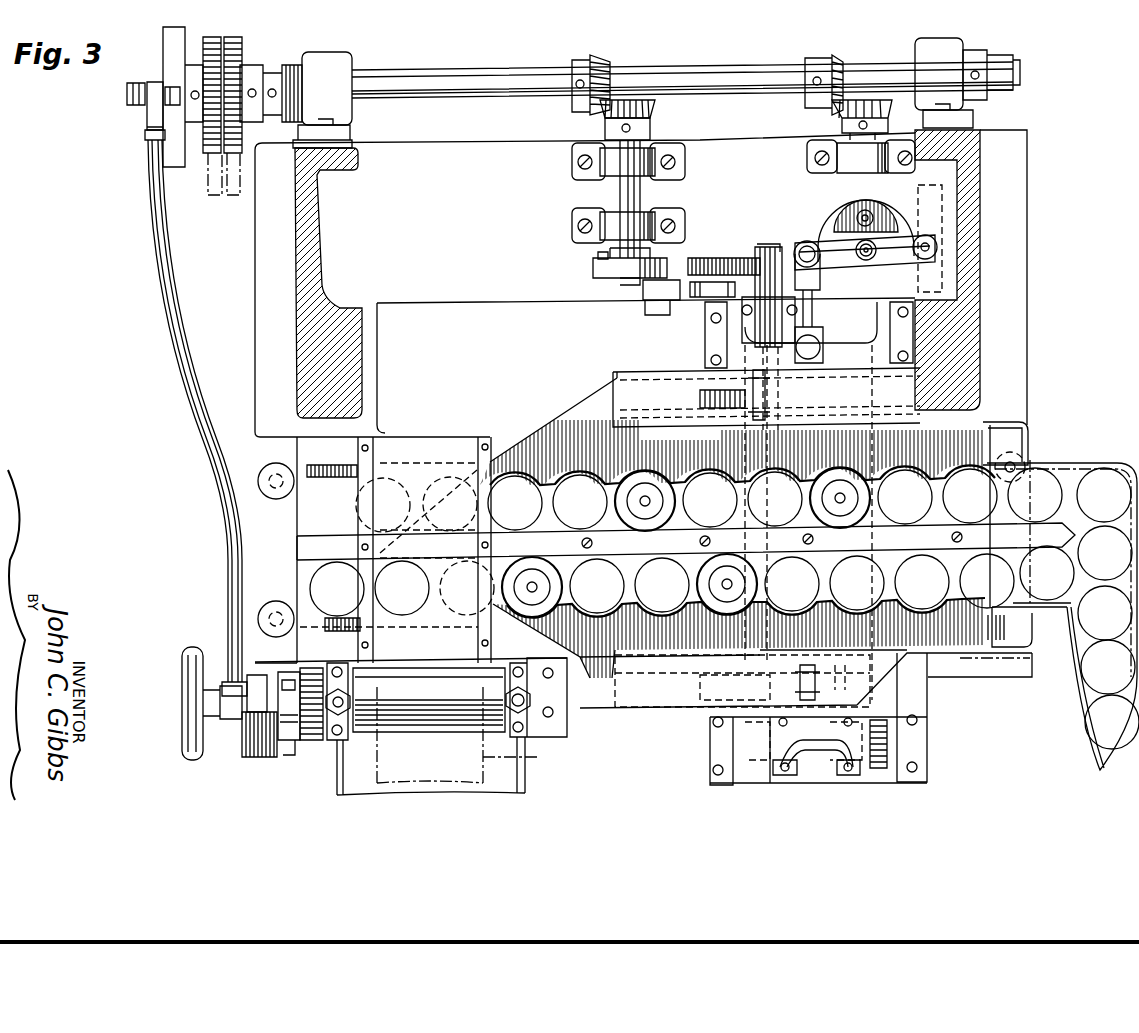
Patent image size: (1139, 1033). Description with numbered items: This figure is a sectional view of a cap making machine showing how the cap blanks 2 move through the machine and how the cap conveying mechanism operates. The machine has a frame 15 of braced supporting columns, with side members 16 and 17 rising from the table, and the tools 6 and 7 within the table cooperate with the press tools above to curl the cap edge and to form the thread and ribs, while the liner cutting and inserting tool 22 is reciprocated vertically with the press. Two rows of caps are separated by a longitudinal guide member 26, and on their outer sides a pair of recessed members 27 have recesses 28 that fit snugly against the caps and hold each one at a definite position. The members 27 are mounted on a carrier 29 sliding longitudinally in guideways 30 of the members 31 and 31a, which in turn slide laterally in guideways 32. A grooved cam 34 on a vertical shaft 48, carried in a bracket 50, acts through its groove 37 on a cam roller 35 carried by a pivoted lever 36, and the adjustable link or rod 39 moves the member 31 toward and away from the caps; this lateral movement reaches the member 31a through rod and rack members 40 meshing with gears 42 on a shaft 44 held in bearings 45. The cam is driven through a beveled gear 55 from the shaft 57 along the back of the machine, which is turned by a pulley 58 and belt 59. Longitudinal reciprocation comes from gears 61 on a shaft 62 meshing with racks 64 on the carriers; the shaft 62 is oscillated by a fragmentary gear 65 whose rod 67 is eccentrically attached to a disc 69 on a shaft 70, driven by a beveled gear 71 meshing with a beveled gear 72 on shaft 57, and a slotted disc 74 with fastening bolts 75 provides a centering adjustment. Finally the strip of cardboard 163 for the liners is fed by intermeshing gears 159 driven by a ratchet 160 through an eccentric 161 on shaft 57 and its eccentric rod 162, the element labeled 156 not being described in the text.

The cap blanks 2 is at (1113, 467).
The tools 6 is at (833, 470).
The tools 7 is at (655, 473).
The frame 15 is at (1041, 265).
The side member 16 is at (305, 218).
The side member 17 is at (991, 167).
The liner cutting and inserting tool 22 is at (390, 550).
The longitudinal guide member 26 is at (970, 528).
The recessed members 27 is at (957, 436).
The recesses 28 is at (935, 460).
The carrier 29 is at (627, 373).
The guideways 30 is at (607, 390).
The member 31 is at (987, 340).
The member 31a is at (928, 712).
The guideways 32 is at (710, 332).
The grooved cam 34 is at (842, 187).
The cam roller 35 is at (866, 260).
The pivoted lever 36 is at (828, 248).
The groove 37 is at (893, 212).
The adjustable link or rod 39 is at (822, 277).
The rod and rack members 40 is at (738, 445).
The gears 42 is at (713, 757).
The shaft 44 is at (813, 745).
The bearings 45 is at (835, 757).
The vertical shaft 48 is at (857, 218).
The bracket 50 is at (835, 58).
The beveled gear 55 is at (837, 110).
The shaft 57 is at (663, 78).
The pulley 58 is at (208, 150).
The belt 59 is at (212, 195).
The gears 61 is at (837, 620).
The shaft 62 is at (778, 443).
The racks 64 is at (700, 398).
The fragmentary gear 65 is at (693, 267).
The rod 67 is at (707, 297).
The disc 69 is at (607, 277).
The shaft 70 is at (618, 192).
The beveled gear 71 is at (653, 110).
The beveled gear 72 is at (597, 60).
The disc 74 is at (597, 267).
The fastening bolts 75 is at (598, 257).
The cylinder 156 is at (425, 703).
The intermeshing gears 159 is at (317, 740).
The ratchet 160 is at (260, 705).
The eccentric 161 is at (173, 68).
The eccentric rod 162 is at (175, 312).
The strip of cardboard 163 is at (532, 755).